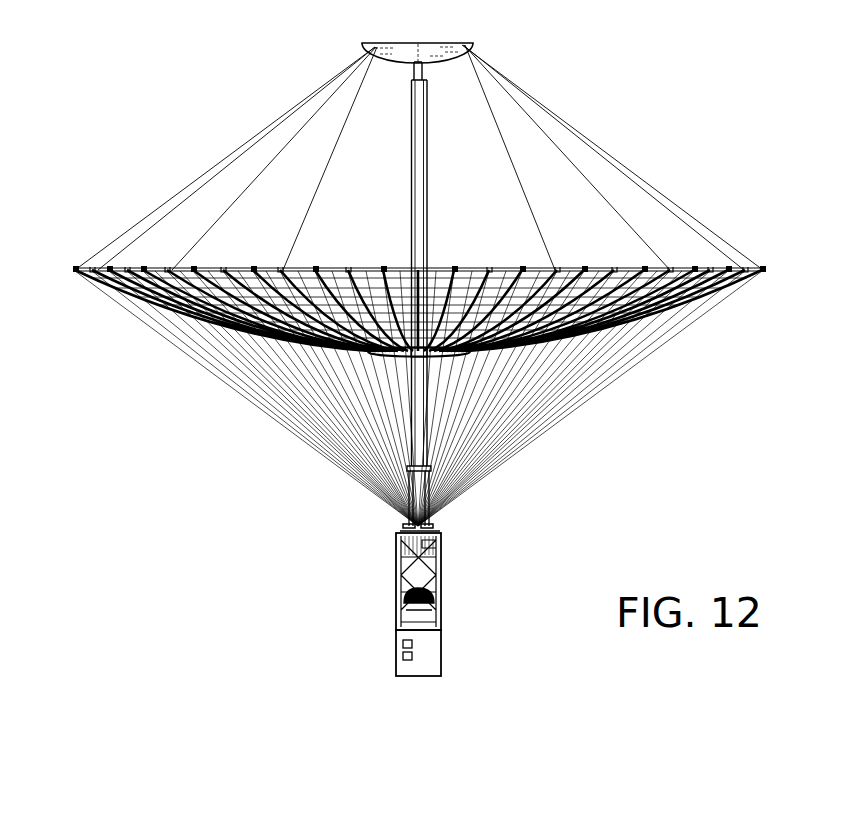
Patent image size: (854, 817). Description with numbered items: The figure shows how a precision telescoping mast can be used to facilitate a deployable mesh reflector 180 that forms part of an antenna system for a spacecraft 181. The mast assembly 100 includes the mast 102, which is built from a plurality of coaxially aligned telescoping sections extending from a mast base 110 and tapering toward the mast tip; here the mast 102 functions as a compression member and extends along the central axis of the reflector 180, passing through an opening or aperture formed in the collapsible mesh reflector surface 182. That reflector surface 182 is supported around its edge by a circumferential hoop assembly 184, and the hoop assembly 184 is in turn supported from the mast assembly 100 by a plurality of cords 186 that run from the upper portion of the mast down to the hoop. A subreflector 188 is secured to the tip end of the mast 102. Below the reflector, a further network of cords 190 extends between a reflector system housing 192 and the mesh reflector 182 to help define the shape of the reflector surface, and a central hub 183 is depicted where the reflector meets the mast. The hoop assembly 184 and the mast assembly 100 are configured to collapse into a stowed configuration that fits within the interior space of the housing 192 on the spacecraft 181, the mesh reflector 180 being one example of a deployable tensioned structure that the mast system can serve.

The deployable mesh reflector 180 is at (670, 72).
The subreflector 188 is at (408, 53).
The cords 186 is at (350, 146).
The mast 102 is at (410, 177).
The mast assembly 100 is at (446, 202).
The circumferential hoop assembly 184 is at (628, 268).
The collapsible mesh reflector surface 182 is at (378, 243).
The central hub 183 is at (458, 364).
The network of cords 190 is at (276, 470).
The mast base 110 is at (388, 516).
The reflector system housing 192 is at (462, 594).
The spacecraft 181 is at (460, 656).